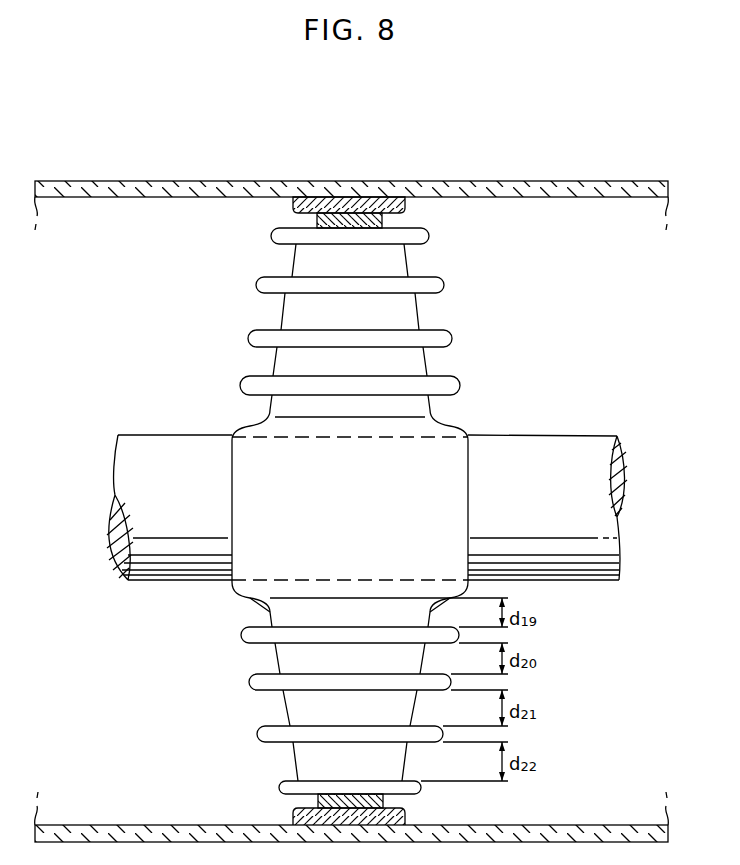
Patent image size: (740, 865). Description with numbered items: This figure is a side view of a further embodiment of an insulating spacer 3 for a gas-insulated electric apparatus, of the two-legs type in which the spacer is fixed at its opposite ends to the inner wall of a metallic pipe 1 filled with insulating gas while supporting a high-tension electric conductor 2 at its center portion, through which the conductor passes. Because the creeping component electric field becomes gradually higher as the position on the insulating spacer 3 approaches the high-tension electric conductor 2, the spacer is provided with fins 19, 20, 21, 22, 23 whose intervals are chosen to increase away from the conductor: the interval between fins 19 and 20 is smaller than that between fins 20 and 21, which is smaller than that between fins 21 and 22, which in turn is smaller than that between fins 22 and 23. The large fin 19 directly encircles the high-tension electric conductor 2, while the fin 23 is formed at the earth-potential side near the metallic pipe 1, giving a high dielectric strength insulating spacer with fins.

The metallic pipe 1 is at (552, 197).
The high-tension electric conductor 2 is at (549, 432).
The insulating spacer 3 is at (331, 513).
The fin 19 is at (236, 598).
The fin 20 is at (243, 636).
The fin 21 is at (249, 683).
The fin 22 is at (259, 736).
The fin 23 is at (282, 787).